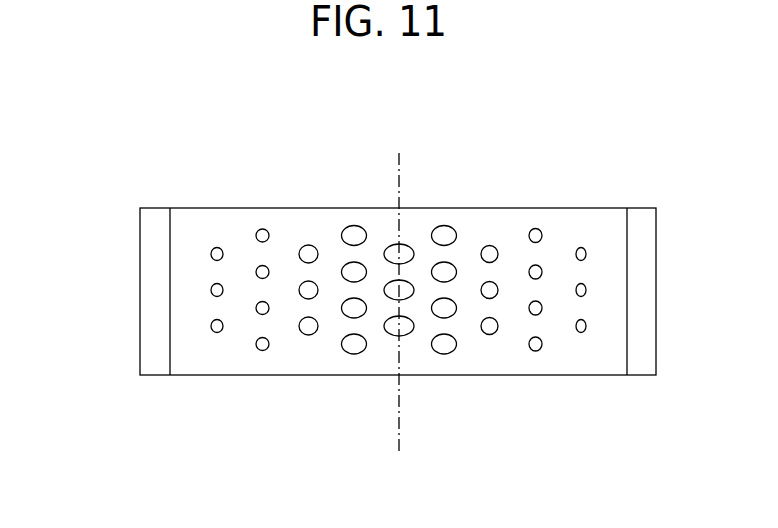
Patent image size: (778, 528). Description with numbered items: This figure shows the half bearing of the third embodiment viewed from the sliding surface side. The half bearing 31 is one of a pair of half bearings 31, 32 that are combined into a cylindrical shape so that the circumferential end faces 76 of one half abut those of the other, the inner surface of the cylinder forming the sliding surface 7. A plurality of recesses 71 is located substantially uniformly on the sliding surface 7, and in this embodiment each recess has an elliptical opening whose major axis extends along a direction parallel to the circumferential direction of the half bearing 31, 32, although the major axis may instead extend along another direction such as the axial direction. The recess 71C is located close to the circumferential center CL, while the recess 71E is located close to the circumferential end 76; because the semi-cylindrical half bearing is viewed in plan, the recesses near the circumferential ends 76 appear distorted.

The sliding surface 7 is at (385, 297).
The recesses 71 is at (360, 292).
The recess close to the circumferential center 71C is at (396, 333).
The recess close to the circumferential end 71E is at (218, 331).
The circumferential end faces 76 is at (157, 315).
The half bearing 31 is at (398, 238).
The half bearing 32 is at (557, 223).
The circumferential center CL is at (397, 185).